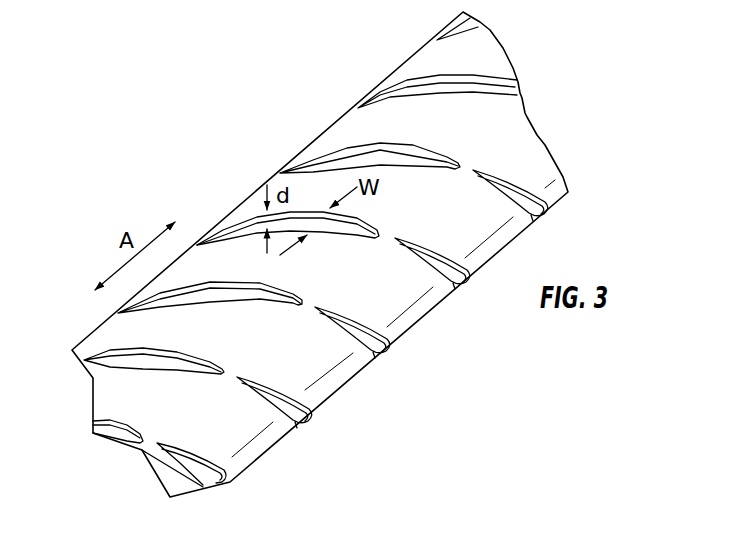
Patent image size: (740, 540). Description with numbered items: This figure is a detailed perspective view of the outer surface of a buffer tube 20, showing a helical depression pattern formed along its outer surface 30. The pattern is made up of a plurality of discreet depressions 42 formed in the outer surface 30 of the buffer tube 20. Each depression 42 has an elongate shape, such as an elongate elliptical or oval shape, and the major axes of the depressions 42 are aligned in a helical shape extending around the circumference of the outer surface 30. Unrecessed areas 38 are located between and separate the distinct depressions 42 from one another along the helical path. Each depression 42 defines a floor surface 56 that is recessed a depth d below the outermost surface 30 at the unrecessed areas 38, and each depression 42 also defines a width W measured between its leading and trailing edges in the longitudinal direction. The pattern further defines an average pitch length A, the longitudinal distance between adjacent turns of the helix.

The buffer tube 20 is at (343, 254).
The outer surface 30 is at (508, 142).
The unrecessed areas 38 is at (388, 233).
The depressions 42 is at (518, 187).
The floor surface 56 is at (316, 218).